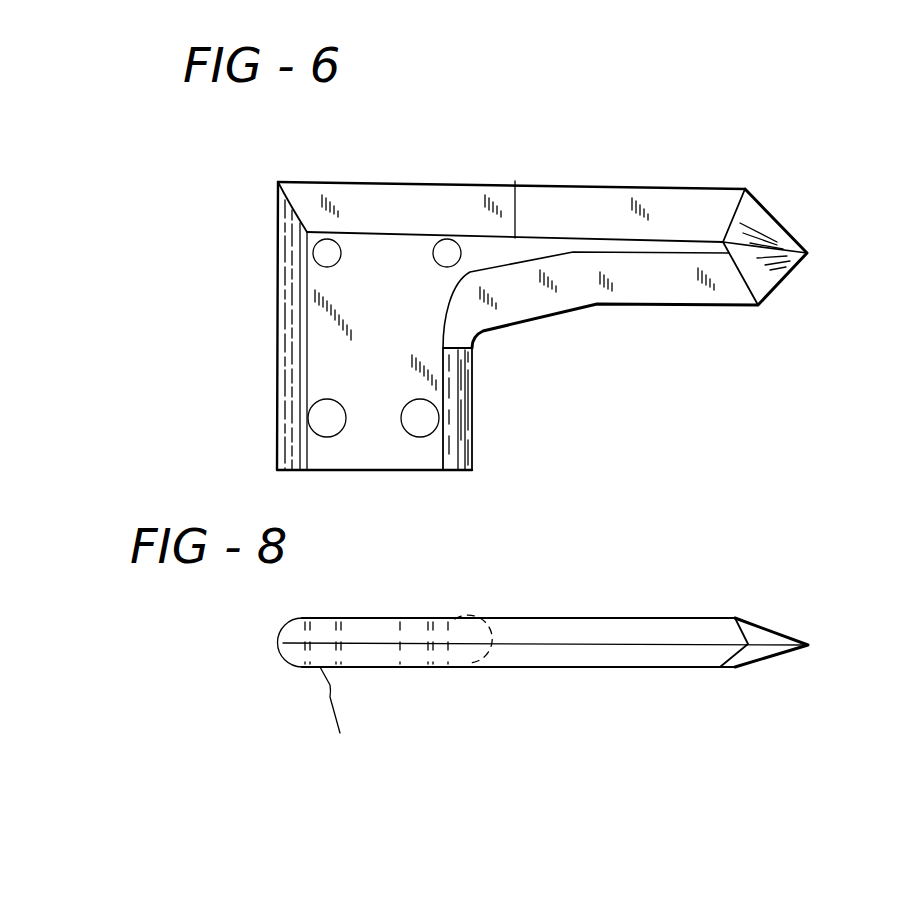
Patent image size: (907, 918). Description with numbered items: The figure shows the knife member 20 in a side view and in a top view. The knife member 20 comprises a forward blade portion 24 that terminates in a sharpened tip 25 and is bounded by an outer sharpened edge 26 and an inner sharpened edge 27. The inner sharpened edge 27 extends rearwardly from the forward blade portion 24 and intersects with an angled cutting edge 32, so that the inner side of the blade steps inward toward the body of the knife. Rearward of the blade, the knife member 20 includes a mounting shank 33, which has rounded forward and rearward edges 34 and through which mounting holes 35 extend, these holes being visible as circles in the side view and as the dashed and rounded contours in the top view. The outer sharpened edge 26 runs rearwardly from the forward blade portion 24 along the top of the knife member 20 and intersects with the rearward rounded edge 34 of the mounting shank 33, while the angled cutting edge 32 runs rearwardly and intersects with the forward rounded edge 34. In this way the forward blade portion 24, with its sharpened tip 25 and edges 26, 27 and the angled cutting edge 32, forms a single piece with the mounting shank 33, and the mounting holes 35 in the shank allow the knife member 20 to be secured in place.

In FIG. 6, the knife member 20 is at (437, 175).
In FIG. 6, the forward blade portion 24 is at (733, 187).
In FIG. 6, the sharpened tip 25 is at (782, 225).
In FIG. 8, the sharpened tip 25 is at (770, 630).
In FIG. 6, the outer sharpened edge 26 is at (657, 187).
In FIG. 8, the outer sharpened edge 26 is at (640, 643).
In FIG. 6, the inner sharpened edge 27 is at (685, 293).
In FIG. 6, the angled cutting edge 32 is at (535, 320).
In FIG. 6, the mounting shank 33 is at (383, 453).
In FIG. 6, the rounded forward and rearward edges 34 is at (473, 435).
In FIG. 8, the rounded forward and rearward edges 34 is at (283, 627).
In FIG. 6, the mounting holes 35 is at (330, 430).
In FIG. 8, the mounting holes 35 is at (334, 718).